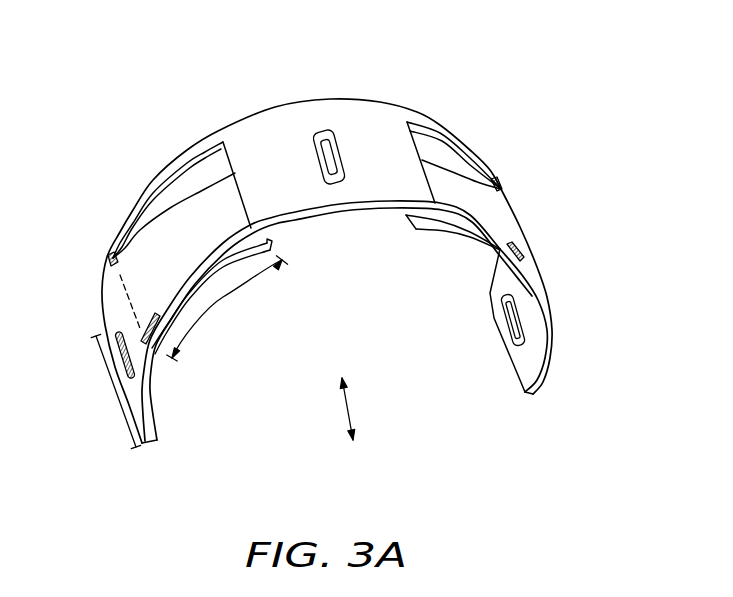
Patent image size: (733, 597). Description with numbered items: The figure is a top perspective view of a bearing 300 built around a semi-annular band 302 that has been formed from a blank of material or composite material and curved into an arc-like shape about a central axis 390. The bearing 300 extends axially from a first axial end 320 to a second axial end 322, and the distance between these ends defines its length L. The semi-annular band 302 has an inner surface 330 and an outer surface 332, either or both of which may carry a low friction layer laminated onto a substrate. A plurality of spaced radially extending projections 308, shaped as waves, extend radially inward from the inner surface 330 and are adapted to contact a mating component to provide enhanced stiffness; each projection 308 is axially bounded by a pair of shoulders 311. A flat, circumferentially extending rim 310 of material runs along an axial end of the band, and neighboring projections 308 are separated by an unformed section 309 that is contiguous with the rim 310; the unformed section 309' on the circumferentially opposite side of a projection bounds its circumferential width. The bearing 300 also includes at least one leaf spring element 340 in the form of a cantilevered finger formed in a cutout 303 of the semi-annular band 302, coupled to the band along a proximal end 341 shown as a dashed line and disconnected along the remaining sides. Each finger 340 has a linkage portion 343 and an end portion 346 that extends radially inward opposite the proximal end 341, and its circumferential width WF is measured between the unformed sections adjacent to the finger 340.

The bearing 300 is at (364, 235).
The semi-annular band 302 is at (323, 235).
The cutout 303 is at (170, 178).
The radially extending projection 308 is at (337, 187).
The unformed section 309 is at (225, 90).
The unformed section 309' is at (215, 159).
The rim 310 is at (280, 112).
The shoulder 311 is at (527, 343).
The first axial end 320 is at (226, 127).
The second axial end 322 is at (153, 413).
The inner surface 330 is at (366, 215).
The outer surface 332 is at (402, 118).
The leaf spring element 340 is at (455, 183).
The proximal end 341 is at (123, 283).
The linkage portion 343 is at (428, 240).
The end portion 346 is at (267, 241).
The central axis 390 is at (347, 407).
The circumferential width of the finger WF is at (213, 305).
The length L is at (113, 393).